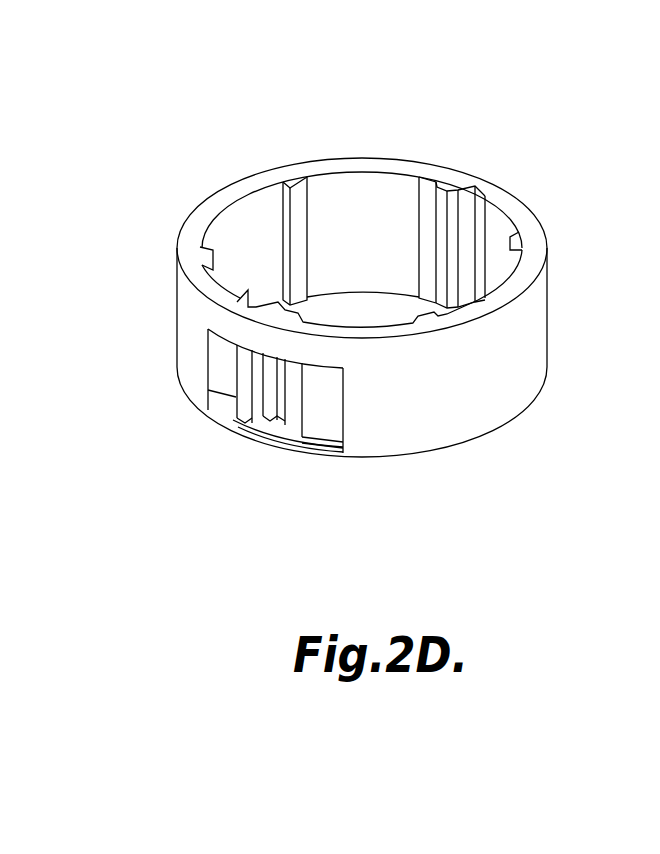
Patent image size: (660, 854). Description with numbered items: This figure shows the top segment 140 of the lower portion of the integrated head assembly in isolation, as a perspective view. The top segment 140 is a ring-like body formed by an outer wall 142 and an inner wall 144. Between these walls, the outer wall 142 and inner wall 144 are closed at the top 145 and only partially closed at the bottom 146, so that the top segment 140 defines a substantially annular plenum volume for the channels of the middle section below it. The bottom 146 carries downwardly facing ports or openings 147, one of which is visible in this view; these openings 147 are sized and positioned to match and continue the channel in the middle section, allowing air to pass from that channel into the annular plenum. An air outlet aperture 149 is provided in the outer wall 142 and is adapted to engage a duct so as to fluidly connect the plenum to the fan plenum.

The top segment 140 is at (411, 306).
The outer wall 142 is at (533, 344).
The inner wall 144 is at (493, 237).
The top 145 is at (443, 178).
The bottom 146 is at (217, 407).
The ports or openings 147 is at (270, 430).
The air outlet aperture 149 is at (347, 410).